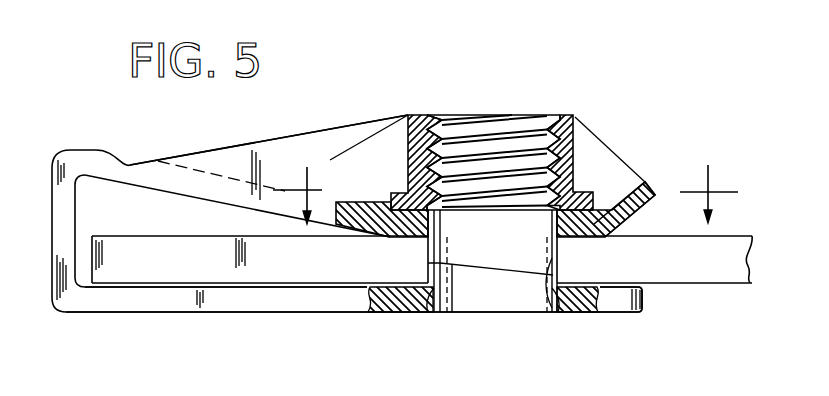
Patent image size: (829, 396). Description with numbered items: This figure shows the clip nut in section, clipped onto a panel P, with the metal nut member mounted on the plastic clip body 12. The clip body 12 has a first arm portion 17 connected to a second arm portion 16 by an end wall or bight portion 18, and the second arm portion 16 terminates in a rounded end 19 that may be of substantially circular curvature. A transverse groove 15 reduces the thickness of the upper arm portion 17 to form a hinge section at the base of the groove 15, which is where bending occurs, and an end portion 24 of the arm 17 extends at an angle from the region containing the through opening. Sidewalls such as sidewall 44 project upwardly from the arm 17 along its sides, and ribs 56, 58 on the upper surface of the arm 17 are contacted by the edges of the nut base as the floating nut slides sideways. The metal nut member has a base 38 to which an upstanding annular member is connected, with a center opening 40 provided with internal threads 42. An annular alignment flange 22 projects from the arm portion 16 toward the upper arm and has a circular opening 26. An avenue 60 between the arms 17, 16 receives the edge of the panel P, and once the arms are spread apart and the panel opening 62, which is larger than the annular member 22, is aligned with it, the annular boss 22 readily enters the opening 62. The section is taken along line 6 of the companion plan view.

The plastic clip body 12 is at (137, 302).
The transverse groove 15 is at (130, 163).
The second arm portion 16 is at (227, 300).
The first arm portion 17 is at (227, 178).
The bight portion 18 is at (52, 252).
The rounded end 19 is at (645, 302).
The annular alignment flange 22 is at (447, 313).
The end portion of arm 24 is at (648, 203).
The circular opening 26 is at (503, 295).
The base 38 is at (565, 112).
The center opening 40 is at (482, 125).
The internal threads 42 is at (453, 123).
The sidewall 44 is at (352, 143).
The rib 56 is at (378, 200).
The rib 58 is at (605, 200).
The avenue 60 is at (637, 226).
The opening in the panel 62 is at (547, 310).
The section line 6- 6 is at (505, 194).
The panel P is at (298, 268).